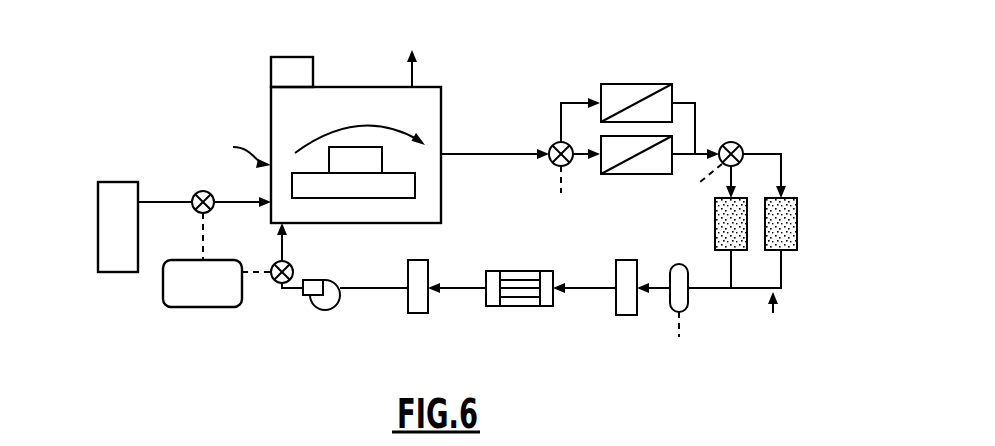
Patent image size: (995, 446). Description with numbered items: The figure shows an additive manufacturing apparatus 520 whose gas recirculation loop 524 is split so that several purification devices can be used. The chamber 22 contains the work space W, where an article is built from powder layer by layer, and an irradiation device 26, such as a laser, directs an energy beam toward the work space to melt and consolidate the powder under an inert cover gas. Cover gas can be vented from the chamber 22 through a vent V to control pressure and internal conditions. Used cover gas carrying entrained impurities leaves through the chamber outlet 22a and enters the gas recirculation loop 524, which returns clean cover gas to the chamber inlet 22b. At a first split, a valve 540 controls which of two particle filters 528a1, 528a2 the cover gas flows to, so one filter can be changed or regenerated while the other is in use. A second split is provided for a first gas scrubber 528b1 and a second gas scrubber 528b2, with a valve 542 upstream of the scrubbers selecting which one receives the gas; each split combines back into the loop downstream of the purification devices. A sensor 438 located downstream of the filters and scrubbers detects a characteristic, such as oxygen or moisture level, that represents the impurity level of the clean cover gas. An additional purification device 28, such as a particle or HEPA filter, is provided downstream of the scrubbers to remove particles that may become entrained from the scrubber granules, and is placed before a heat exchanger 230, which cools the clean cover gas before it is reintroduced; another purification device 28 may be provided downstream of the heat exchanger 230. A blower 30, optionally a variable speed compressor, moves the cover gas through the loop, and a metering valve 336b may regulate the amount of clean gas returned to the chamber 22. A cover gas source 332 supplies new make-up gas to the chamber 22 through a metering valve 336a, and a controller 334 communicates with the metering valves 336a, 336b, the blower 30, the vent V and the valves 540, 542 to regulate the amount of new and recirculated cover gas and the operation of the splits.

The chamber 22 is at (441, 98).
The chamber outlet 22a is at (441, 150).
The chamber inlet 22b is at (287, 228).
The irradiation device 26 is at (313, 73).
The purification device 28 is at (616, 270).
The blower 30 is at (338, 303).
The heat exchanger 230 is at (512, 271).
The cover gas source 332 is at (98, 243).
The controller 334 is at (213, 307).
The metering valve 336a is at (195, 194).
The metering valve 336b is at (273, 281).
The sensor 438 is at (672, 270).
The additive manufacturing apparatus 520 is at (135, 338).
The gas recirculation loop 524 is at (773, 313).
The particle filter 528a1 is at (630, 84).
The particle filter 528a2 is at (675, 147).
The first gas scrubber 528b1 is at (715, 230).
The second gas scrubber 528b2 is at (797, 218).
The valve 540 is at (552, 146).
The valve 542 is at (740, 145).
The vent V is at (414, 77).
The work space W is at (244, 150).